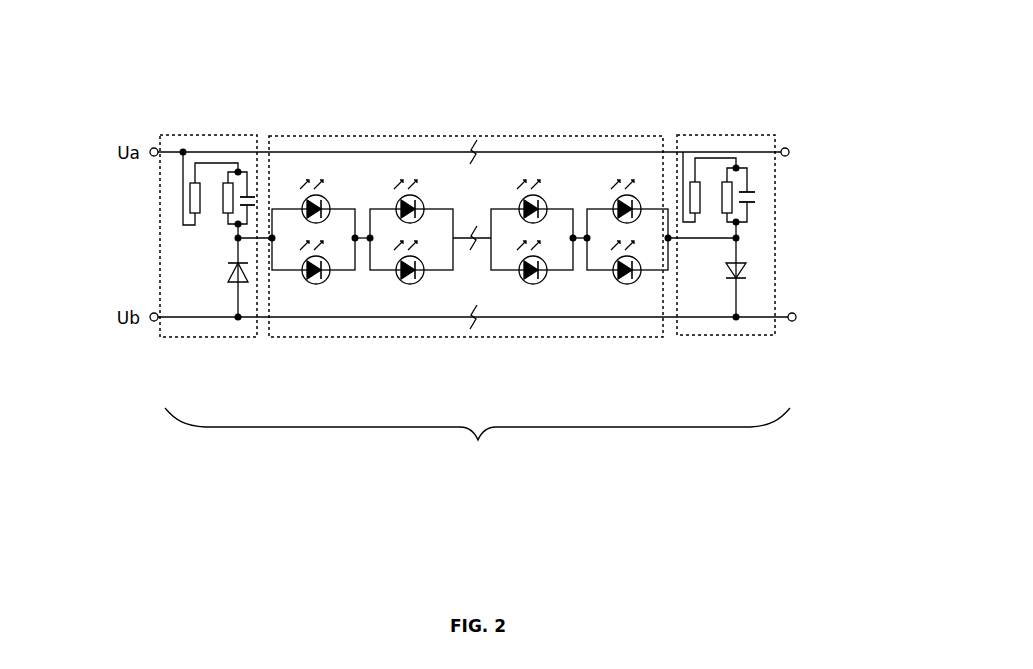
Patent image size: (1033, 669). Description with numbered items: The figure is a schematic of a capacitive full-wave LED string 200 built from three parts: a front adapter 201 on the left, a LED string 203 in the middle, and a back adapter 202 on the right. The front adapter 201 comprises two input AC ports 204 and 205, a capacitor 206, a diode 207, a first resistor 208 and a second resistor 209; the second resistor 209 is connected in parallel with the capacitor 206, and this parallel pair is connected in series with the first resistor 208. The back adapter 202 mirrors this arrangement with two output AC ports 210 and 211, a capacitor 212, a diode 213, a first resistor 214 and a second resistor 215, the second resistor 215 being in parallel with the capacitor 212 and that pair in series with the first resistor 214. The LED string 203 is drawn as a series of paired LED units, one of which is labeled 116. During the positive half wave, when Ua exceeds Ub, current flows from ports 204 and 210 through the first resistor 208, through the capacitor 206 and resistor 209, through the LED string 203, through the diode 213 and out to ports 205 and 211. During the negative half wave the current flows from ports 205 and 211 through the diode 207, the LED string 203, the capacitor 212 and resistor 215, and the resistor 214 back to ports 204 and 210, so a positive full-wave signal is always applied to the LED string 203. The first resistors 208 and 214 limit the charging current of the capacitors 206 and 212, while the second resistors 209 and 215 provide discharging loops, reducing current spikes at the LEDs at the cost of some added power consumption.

The capacitive full-wave LED string 200 is at (477, 465).
The front adapter 201 is at (193, 129).
The back adapter 202 is at (725, 130).
The LED string 203 is at (487, 221).
The input AC port 204 is at (150, 136).
The input AC port 205 is at (150, 328).
The capacitor 206 is at (256, 186).
The diode 207 is at (222, 273).
The first resistor 208 is at (188, 198).
The second resistor 209 is at (218, 213).
The output AC port 210 is at (785, 142).
The output AC port 211 is at (792, 327).
The capacitor 212 is at (758, 194).
The diode 213 is at (752, 272).
The first resistor 214 is at (705, 220).
The second resistor 215 is at (723, 183).
The LED unit 116 is at (328, 298).